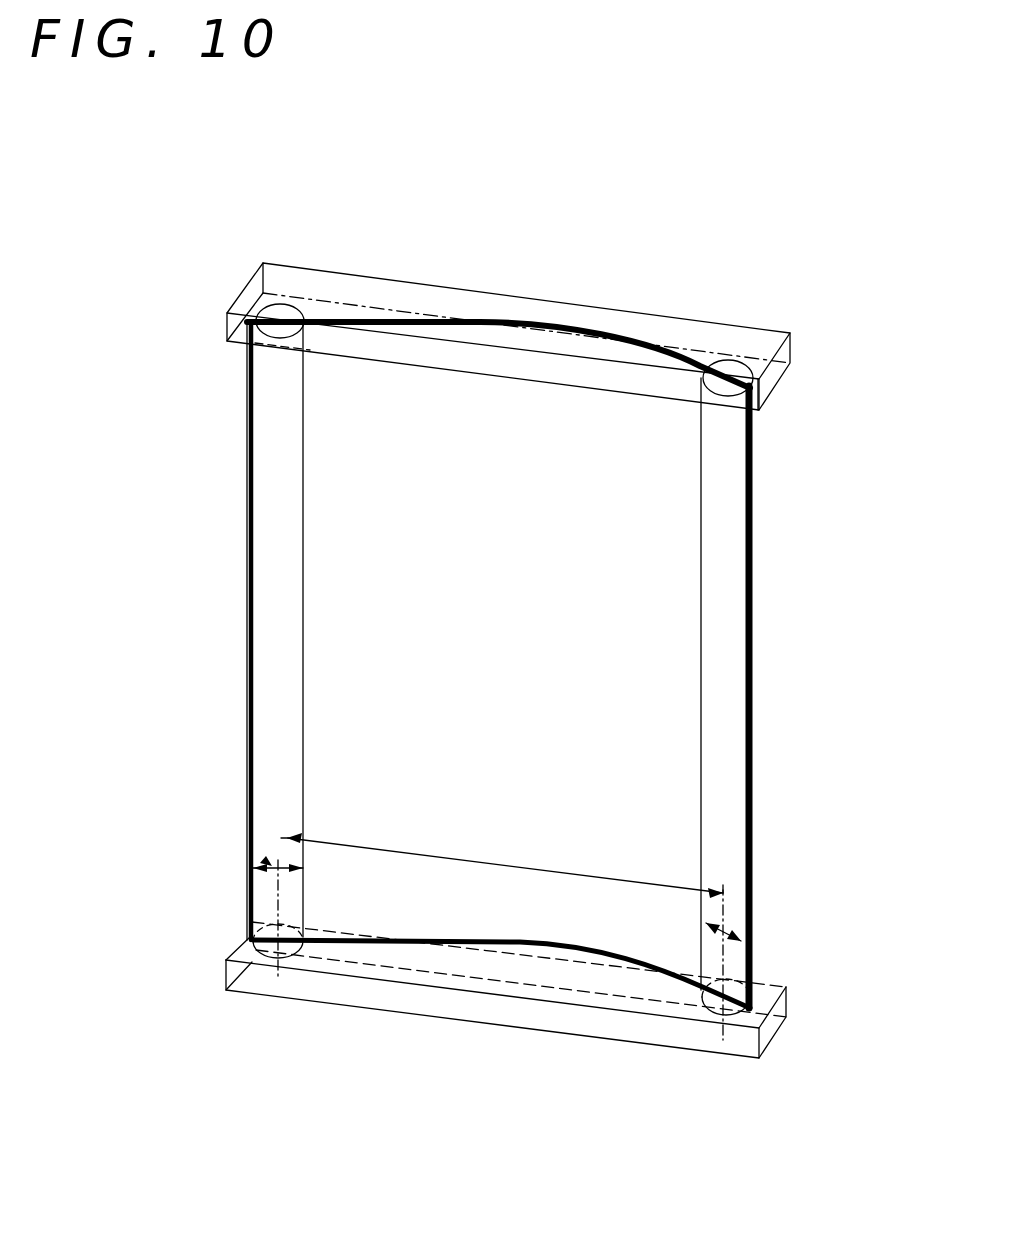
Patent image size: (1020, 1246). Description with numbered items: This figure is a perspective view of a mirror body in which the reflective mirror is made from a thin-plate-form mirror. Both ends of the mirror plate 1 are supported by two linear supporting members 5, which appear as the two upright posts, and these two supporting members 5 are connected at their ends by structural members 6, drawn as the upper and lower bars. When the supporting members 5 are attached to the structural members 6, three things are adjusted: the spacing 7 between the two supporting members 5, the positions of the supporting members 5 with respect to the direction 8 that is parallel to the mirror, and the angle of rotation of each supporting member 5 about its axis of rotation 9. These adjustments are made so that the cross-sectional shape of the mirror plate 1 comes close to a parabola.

The mirror plate 1 is at (595, 606).
The linear supporting member 5 is at (278, 633).
The structural member 6 is at (688, 328).
The spacing 7 is at (628, 877).
The direction parallel to the mirror 8 is at (268, 862).
The axis of rotation 9 is at (281, 838).